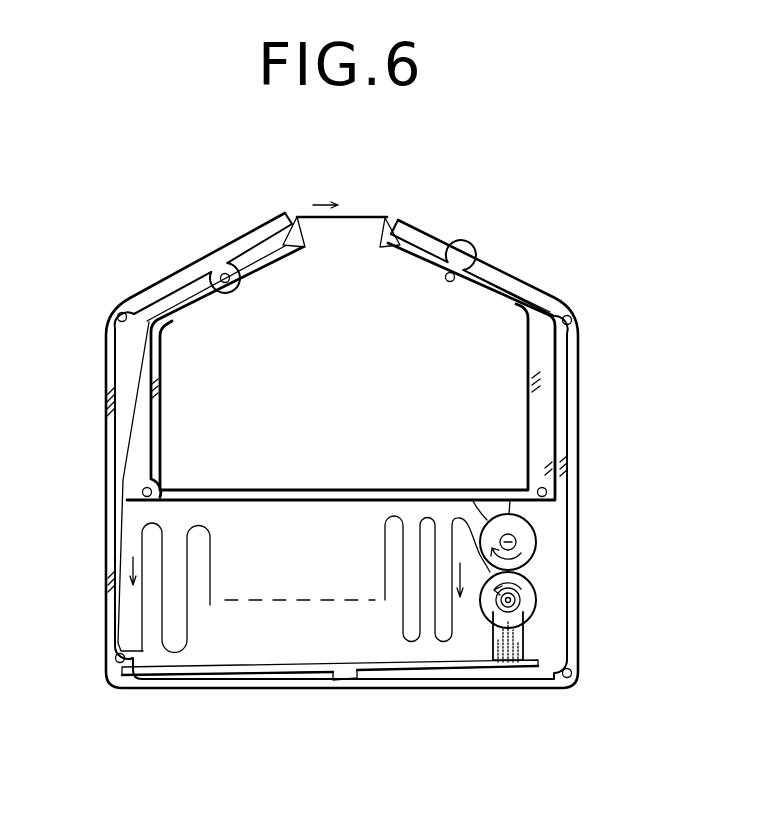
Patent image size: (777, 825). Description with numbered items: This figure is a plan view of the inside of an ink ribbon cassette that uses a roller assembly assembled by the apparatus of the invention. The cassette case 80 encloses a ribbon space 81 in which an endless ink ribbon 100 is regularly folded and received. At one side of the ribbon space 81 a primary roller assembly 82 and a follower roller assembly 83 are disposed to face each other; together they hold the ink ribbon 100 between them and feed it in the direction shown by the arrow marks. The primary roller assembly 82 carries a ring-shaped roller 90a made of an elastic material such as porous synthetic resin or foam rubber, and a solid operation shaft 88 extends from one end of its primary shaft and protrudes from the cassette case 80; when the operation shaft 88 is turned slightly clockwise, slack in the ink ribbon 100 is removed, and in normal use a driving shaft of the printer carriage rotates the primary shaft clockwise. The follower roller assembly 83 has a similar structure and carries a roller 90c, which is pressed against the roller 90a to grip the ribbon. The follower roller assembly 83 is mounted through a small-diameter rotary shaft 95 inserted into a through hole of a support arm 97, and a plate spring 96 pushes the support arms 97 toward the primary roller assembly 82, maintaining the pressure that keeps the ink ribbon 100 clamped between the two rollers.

The cassette case 80 is at (575, 410).
The ribbon space 81 is at (243, 637).
The primary roller assembly 82 is at (554, 560).
The follower roller assembly 83 is at (554, 596).
The operation shaft 88 is at (508, 542).
The roller 90a is at (535, 542).
The roller 90c is at (530, 612).
The rotary shaft 95 is at (515, 607).
The plate spring 96 is at (422, 667).
The support arm 97 is at (507, 660).
The ink ribbon 100 is at (380, 218).